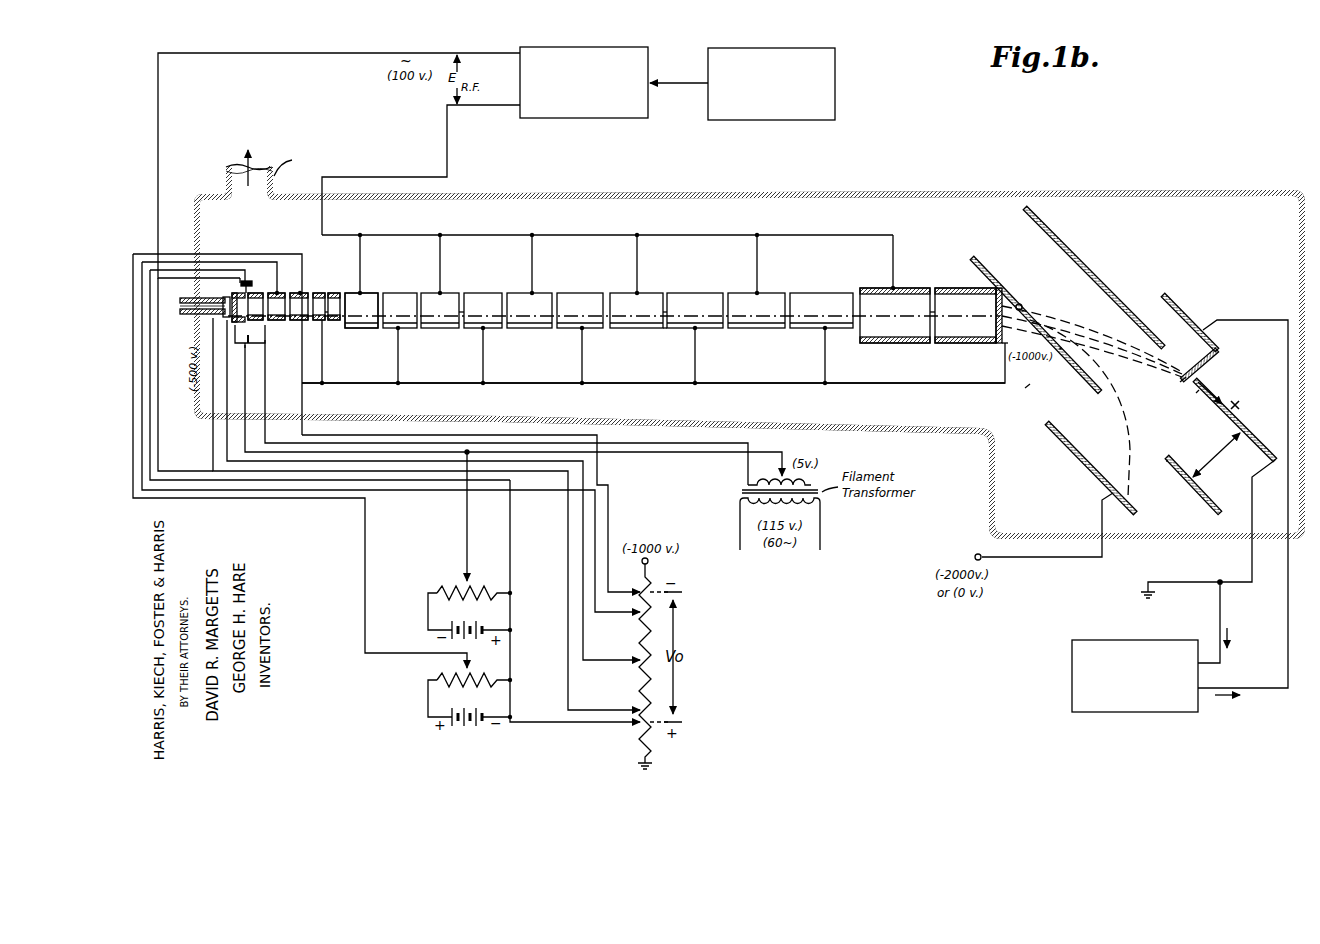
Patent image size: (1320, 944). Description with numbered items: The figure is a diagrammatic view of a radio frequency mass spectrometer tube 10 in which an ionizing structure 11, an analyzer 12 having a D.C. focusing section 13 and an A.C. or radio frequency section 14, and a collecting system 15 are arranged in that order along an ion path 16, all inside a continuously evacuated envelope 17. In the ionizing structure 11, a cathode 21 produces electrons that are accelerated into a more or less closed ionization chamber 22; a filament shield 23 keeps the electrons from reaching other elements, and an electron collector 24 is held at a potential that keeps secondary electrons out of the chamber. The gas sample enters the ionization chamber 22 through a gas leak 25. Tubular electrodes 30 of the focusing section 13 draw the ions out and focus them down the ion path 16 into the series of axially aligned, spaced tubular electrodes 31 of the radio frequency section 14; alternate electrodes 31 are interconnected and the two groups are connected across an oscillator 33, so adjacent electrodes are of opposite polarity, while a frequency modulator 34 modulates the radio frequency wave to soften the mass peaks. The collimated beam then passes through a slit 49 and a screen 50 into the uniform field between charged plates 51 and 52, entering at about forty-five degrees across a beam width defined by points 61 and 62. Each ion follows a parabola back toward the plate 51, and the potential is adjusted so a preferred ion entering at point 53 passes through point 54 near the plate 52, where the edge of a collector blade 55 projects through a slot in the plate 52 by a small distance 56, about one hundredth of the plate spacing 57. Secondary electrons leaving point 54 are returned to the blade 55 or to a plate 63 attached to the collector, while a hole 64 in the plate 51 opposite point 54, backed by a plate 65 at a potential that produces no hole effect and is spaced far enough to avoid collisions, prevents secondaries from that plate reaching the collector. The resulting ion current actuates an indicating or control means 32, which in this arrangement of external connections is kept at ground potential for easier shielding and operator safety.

The radio frequency mass spectrometer tube 10 is at (853, 182).
The ionizing structure 11 is at (244, 263).
The analyzer 12 is at (531, 389).
The analyzer section 13 is at (300, 330).
The A.C. section 14 is at (671, 344).
The collecting system 15 is at (1027, 387).
The ion path 16 is at (375, 294).
The envelope 17 is at (659, 191).
The cathode 21 is at (263, 332).
The ionization chamber 22 is at (250, 292).
The filament shield 23 is at (248, 341).
The electron collector 24 is at (240, 283).
The gas leak 25 is at (226, 311).
The tubular electrodes 30 is at (283, 294).
The tubular electrodes 31 is at (324, 322).
The indicating or control means 32 is at (1130, 713).
The oscillator 33 is at (582, 47).
The frequency modulator 34 is at (762, 48).
The slit 49 is at (990, 300).
The screen 50 is at (1013, 310).
The plate 51 is at (1085, 380).
The plate 52 is at (1098, 287).
The point 53 is at (1040, 306).
The point 54 is at (1180, 382).
The blade 55 is at (1212, 372).
The small distance 56 is at (1196, 393).
The plate spacing 57 is at (1217, 460).
The point 61 is at (1019, 306).
The point 62 is at (1003, 344).
The plate 63 is at (1164, 296).
The hole 64 is at (1166, 462).
The plate 65 is at (1092, 472).